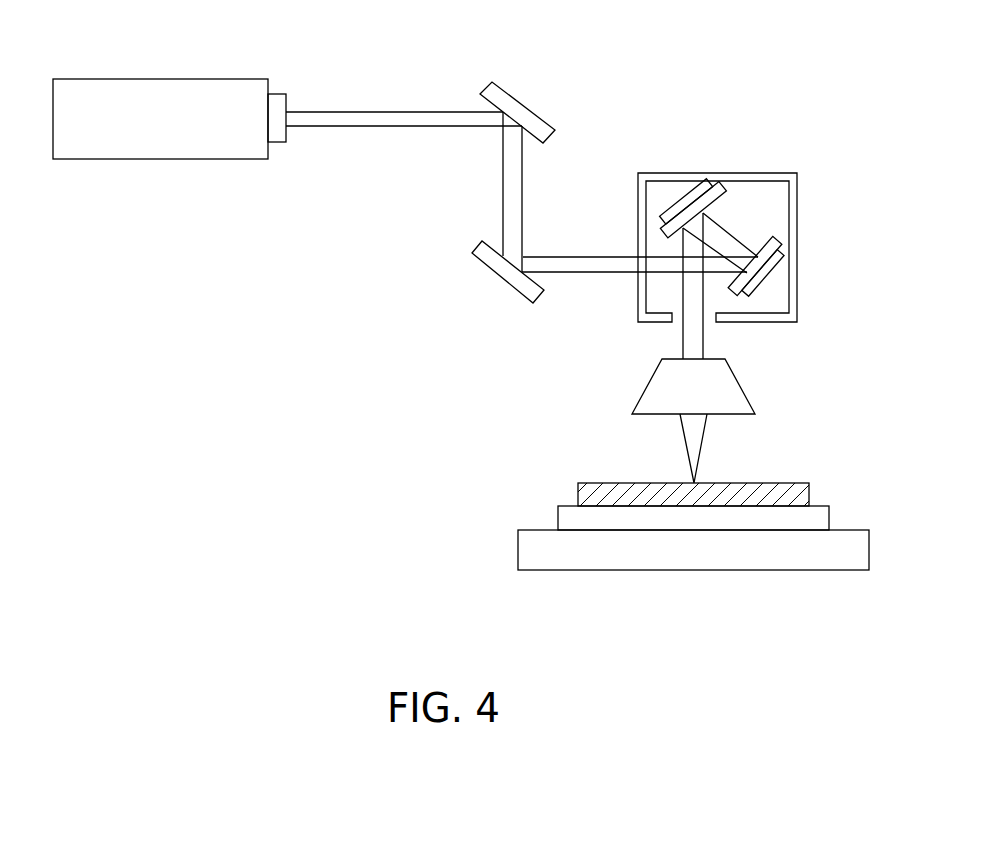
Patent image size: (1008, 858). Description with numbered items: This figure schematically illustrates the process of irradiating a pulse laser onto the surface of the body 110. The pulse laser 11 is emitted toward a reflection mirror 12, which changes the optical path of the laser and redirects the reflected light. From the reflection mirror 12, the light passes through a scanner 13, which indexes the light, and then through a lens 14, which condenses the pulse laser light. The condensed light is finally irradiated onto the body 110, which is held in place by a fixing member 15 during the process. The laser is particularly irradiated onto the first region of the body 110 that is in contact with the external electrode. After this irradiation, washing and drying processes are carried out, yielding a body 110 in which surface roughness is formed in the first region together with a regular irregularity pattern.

The pulse laser 11 is at (153, 85).
The reflection mirror 12 is at (492, 265).
The scanner 13 is at (748, 177).
The lens 14 is at (732, 387).
The body 110 is at (578, 492).
The fixing member 15 is at (558, 517).